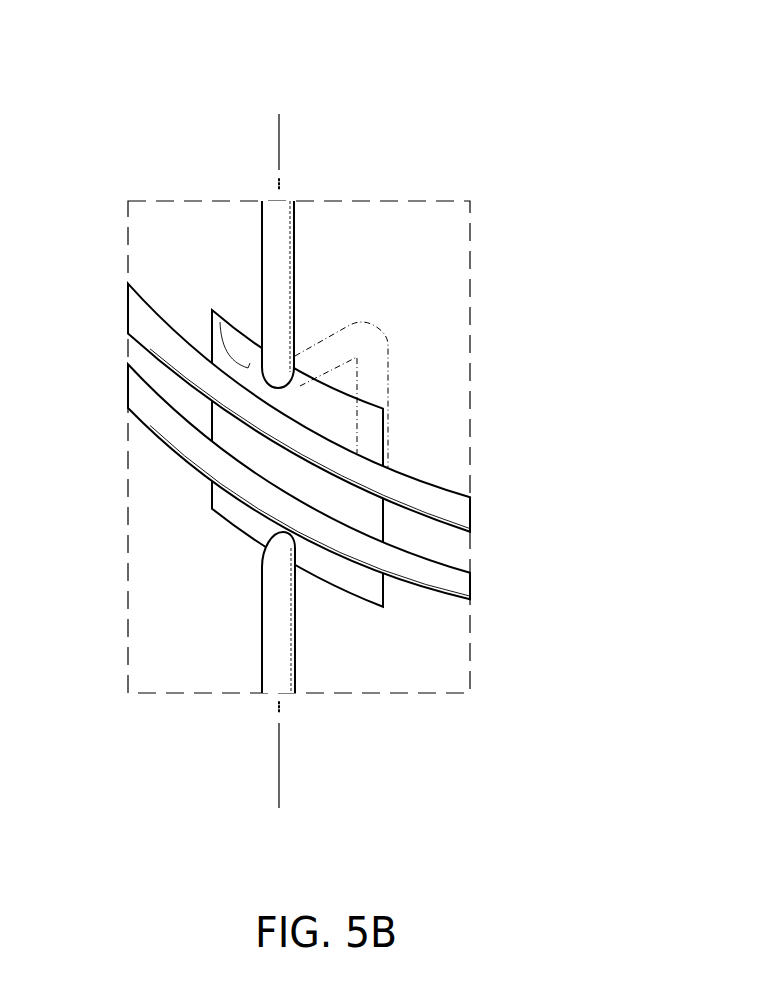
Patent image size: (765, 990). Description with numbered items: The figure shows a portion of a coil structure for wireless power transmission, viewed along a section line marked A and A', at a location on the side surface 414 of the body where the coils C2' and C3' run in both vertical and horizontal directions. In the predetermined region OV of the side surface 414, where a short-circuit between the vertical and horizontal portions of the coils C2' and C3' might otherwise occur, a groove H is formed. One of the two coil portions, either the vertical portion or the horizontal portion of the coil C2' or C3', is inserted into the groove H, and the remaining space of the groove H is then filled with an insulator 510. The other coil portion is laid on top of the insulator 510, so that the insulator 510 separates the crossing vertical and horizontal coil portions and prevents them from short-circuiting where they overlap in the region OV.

The side surface 414 is at (140, 530).
The insulator 510 is at (352, 570).
The groove H is at (214, 308).
The predetermined region OV is at (197, 332).
The coil C2' is at (359, 442).
The coil C3' is at (359, 442).
The section line A is at (281, 107).
The section line A' is at (282, 755).